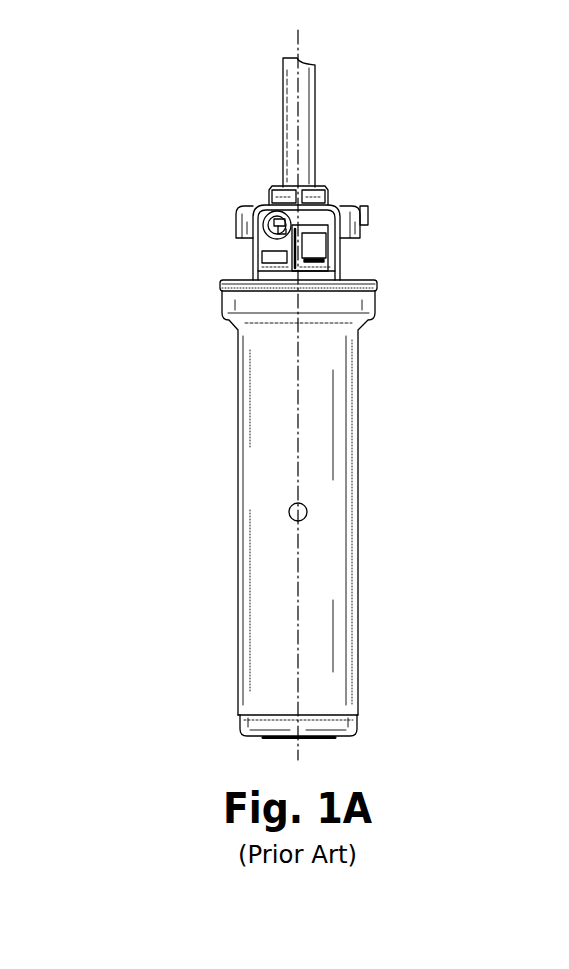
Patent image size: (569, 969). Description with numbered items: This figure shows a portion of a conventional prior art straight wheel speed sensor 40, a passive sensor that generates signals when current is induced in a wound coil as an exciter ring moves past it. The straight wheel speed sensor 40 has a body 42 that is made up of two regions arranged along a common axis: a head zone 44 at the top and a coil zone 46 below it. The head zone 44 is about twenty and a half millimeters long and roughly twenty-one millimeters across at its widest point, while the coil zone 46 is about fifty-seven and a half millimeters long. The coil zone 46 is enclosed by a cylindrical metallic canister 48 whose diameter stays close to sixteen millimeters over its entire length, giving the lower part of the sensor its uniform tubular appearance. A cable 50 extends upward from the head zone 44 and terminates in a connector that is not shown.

The straight wheel speed sensor 40 is at (423, 304).
The body 42 is at (342, 278).
The head zone 44 is at (205, 255).
The coil zone 46 is at (200, 448).
The cylindrical metallic canister 48 is at (358, 448).
The cable 50 is at (315, 103).